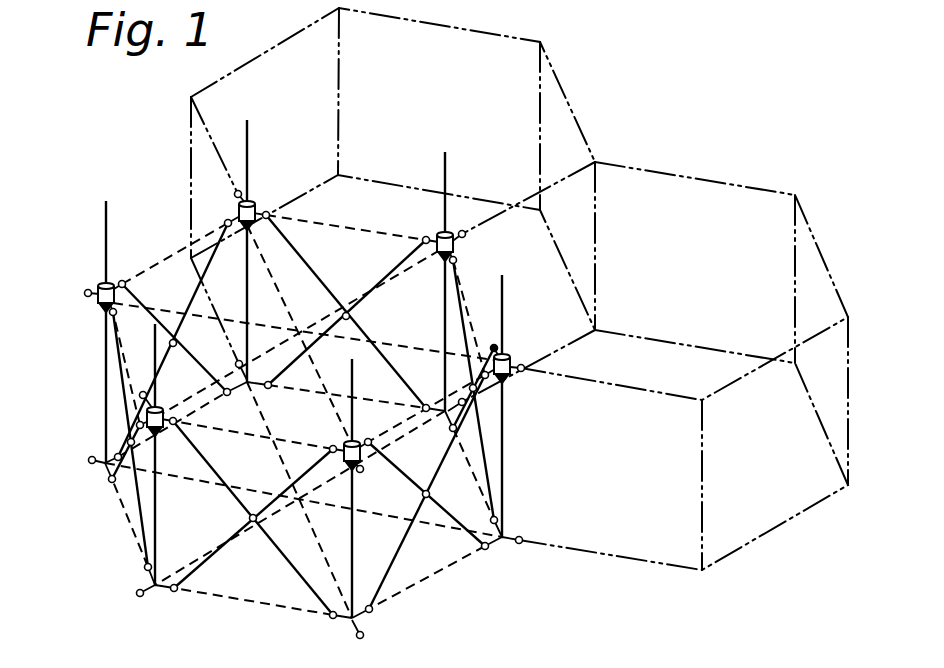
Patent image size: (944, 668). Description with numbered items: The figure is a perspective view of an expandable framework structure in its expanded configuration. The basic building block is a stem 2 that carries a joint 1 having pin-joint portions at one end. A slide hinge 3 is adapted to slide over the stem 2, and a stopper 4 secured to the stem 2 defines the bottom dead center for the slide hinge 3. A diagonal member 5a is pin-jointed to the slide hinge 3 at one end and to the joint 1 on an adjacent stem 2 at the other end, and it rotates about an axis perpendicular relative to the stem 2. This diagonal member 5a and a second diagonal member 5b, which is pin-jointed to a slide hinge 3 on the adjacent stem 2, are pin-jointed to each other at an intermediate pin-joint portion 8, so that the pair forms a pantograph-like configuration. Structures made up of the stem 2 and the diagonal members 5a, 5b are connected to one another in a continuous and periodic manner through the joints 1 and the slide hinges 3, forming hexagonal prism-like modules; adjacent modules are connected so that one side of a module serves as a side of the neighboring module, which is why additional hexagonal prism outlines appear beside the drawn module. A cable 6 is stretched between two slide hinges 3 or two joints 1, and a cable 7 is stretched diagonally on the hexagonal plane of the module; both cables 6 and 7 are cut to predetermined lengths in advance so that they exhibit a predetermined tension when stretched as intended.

The joint 1 is at (110, 463).
The stem 2 is at (104, 365).
The slide hinge 3 is at (85, 293).
The stopper 4 is at (104, 310).
The diagonal member 5a is at (126, 410).
The diagonal member 5b is at (112, 482).
The cable 6 is at (157, 307).
The cable 7 is at (153, 267).
The intermediate pin-joint portion 8 is at (107, 443).